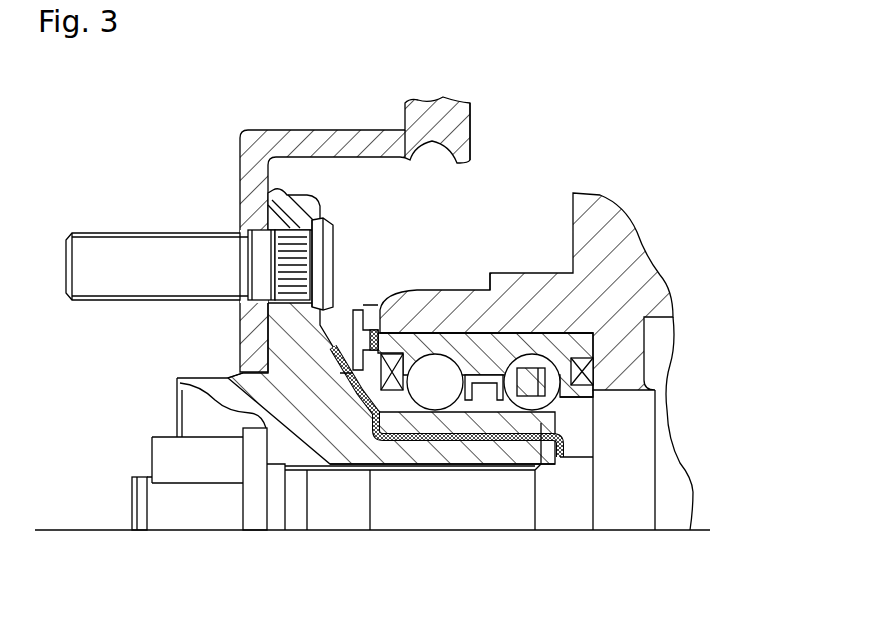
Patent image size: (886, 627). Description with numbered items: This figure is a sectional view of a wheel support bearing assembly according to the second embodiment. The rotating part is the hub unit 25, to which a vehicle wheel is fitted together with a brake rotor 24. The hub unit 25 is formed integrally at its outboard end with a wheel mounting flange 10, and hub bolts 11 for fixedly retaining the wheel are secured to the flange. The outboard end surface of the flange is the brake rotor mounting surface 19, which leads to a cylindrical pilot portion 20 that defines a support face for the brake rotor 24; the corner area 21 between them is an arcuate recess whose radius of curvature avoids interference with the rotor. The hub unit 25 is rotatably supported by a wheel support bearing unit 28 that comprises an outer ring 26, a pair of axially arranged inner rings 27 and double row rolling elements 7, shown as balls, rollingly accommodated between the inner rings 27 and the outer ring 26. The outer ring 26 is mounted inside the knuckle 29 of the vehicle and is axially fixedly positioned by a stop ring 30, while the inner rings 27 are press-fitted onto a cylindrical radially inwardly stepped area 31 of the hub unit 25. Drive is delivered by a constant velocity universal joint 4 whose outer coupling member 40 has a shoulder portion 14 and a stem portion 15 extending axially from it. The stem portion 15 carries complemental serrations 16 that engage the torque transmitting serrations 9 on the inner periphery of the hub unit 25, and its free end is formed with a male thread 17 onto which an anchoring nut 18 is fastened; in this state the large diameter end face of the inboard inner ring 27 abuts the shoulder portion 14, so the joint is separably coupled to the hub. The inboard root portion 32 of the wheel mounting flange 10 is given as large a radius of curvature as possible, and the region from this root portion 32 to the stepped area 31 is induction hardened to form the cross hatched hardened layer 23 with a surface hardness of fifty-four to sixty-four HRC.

The constant velocity universal joint 4 is at (670, 383).
The rolling elements 7 is at (438, 395).
The torque transmitting serrations 9 is at (373, 467).
The wheel mounting flange 10 is at (263, 188).
The hub bolt 11 is at (90, 246).
The shoulder portion 14 is at (627, 497).
The stem portion 15 is at (341, 517).
The complemental serrations 16 is at (320, 465).
The male thread 17 is at (140, 472).
The anchoring nut 18 is at (170, 517).
The brake rotor mounting surface 19 is at (285, 207).
The cylindrical pilot portion 20 is at (215, 370).
The corner area 21 is at (243, 372).
The hardened layer 23 is at (320, 400).
The brake rotor 24 is at (330, 135).
The hub unit 25 is at (222, 391).
The outer ring 26 is at (497, 345).
The inner ring 27 is at (563, 422).
The wheel support bearing unit 28 is at (370, 370).
The knuckle 29 is at (455, 295).
The stop ring 30 is at (378, 320).
The radially inwardly stepped area 31 is at (546, 440).
The inboard root portion 32 is at (275, 425).
The outer coupling member 40 is at (632, 471).